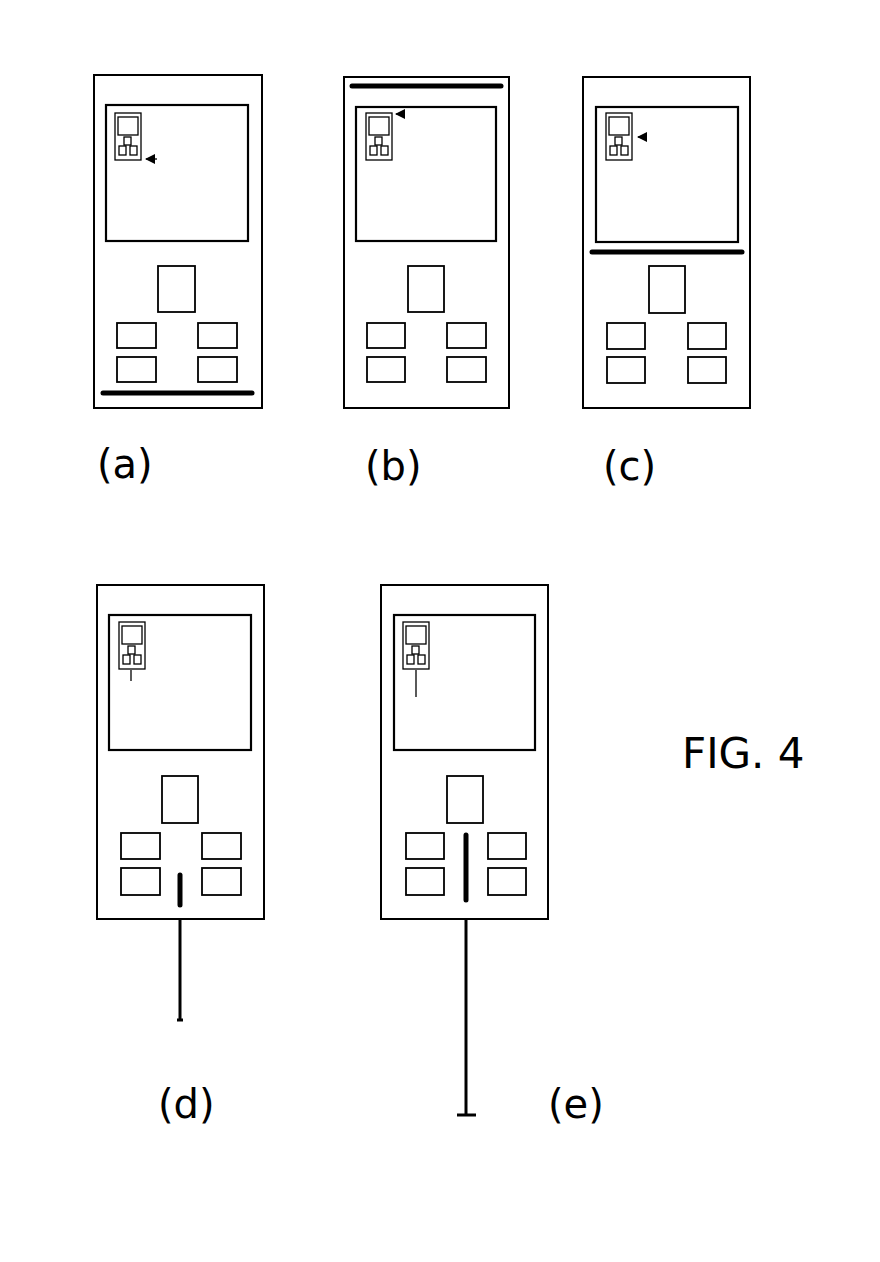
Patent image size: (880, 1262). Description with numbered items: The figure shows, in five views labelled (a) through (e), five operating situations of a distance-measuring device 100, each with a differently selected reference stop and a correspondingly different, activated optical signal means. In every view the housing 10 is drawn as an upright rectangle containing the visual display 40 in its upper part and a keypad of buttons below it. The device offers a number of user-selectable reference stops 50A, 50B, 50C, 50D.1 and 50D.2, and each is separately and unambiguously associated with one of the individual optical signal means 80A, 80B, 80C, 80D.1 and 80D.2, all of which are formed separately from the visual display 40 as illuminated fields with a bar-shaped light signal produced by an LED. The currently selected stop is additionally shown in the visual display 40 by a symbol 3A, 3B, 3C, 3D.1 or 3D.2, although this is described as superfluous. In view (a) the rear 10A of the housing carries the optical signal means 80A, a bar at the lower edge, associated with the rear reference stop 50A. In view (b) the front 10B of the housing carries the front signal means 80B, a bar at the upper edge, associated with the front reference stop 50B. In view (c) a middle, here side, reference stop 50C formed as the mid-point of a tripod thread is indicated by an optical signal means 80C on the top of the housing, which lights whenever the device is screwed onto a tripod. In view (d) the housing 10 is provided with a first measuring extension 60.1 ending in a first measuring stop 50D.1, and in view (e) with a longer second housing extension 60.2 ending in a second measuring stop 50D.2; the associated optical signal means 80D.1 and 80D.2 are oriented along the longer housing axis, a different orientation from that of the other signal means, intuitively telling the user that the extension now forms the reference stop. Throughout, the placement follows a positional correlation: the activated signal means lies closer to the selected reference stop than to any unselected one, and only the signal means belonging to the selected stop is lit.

The distance-measuring device 100 is at (668, 600).
The housing 10 is at (204, 584).
The rear of the housing 10A is at (172, 420).
The front of the housing 10B is at (481, 72).
The visual display 40 is at (208, 195).
The symbol 3A is at (141, 135).
The symbol 3B is at (392, 138).
The symbol 3C is at (632, 150).
The symbol 3D.1 is at (145, 650).
The symbol 3D.2 is at (429, 650).
The optical signal means 80A is at (103, 392).
The front signal means 80B is at (352, 85).
The optical signal means 80C is at (592, 252).
The optical signal means 80D.1 is at (176, 906).
The optical signal means 80D.2 is at (462, 901).
The rear reference stop 50A is at (266, 407).
The front reference stop 50B is at (515, 77).
The middle (side) reference stop 50C is at (756, 252).
The first measuring stop 50D.1 is at (181, 1021).
The second measuring stop 50D.2 is at (458, 1116).
The first measuring extension 60.1 is at (182, 975).
The second housing extension 60.2 is at (468, 1006).